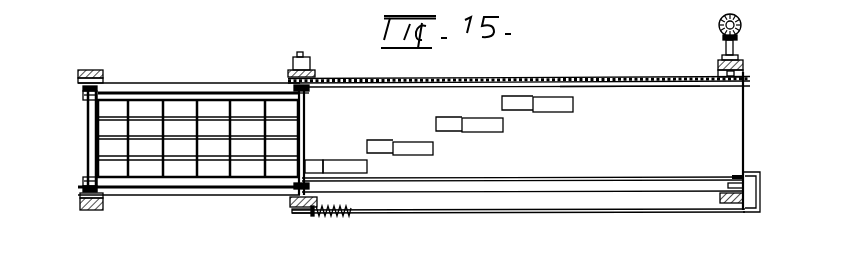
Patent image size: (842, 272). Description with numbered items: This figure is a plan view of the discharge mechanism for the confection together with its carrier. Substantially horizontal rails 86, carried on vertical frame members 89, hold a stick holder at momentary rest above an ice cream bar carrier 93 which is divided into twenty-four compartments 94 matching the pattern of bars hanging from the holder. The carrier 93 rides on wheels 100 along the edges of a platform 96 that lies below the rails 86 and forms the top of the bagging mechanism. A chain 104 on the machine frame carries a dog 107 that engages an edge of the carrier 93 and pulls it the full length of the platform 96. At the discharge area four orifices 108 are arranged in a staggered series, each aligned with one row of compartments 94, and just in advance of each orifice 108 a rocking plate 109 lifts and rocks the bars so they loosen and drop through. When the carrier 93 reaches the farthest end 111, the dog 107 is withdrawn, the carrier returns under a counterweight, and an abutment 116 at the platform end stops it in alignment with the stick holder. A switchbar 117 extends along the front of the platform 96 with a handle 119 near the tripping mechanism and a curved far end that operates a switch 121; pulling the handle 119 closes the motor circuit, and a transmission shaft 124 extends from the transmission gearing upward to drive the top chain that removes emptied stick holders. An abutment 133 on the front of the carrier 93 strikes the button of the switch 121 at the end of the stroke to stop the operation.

The horizontal rails 86 is at (149, 83).
The vertical frame members 89 is at (89, 69).
The ice cream bar carrier 93 is at (183, 98).
The compartments 94 is at (248, 107).
The platform 96 is at (613, 153).
The wheels 100 is at (83, 90).
The chain 104 is at (621, 78).
The dog 107 is at (318, 78).
The orifices 108 is at (412, 147).
The rocking plates 109 is at (317, 160).
The farthest end 111 is at (745, 142).
The abutment 116 is at (311, 221).
The switchbar 117 is at (522, 214).
The handle 119 is at (298, 217).
The switch 121 is at (760, 187).
The transmission shaft 124 is at (742, 24).
The abutment 133 is at (307, 160).